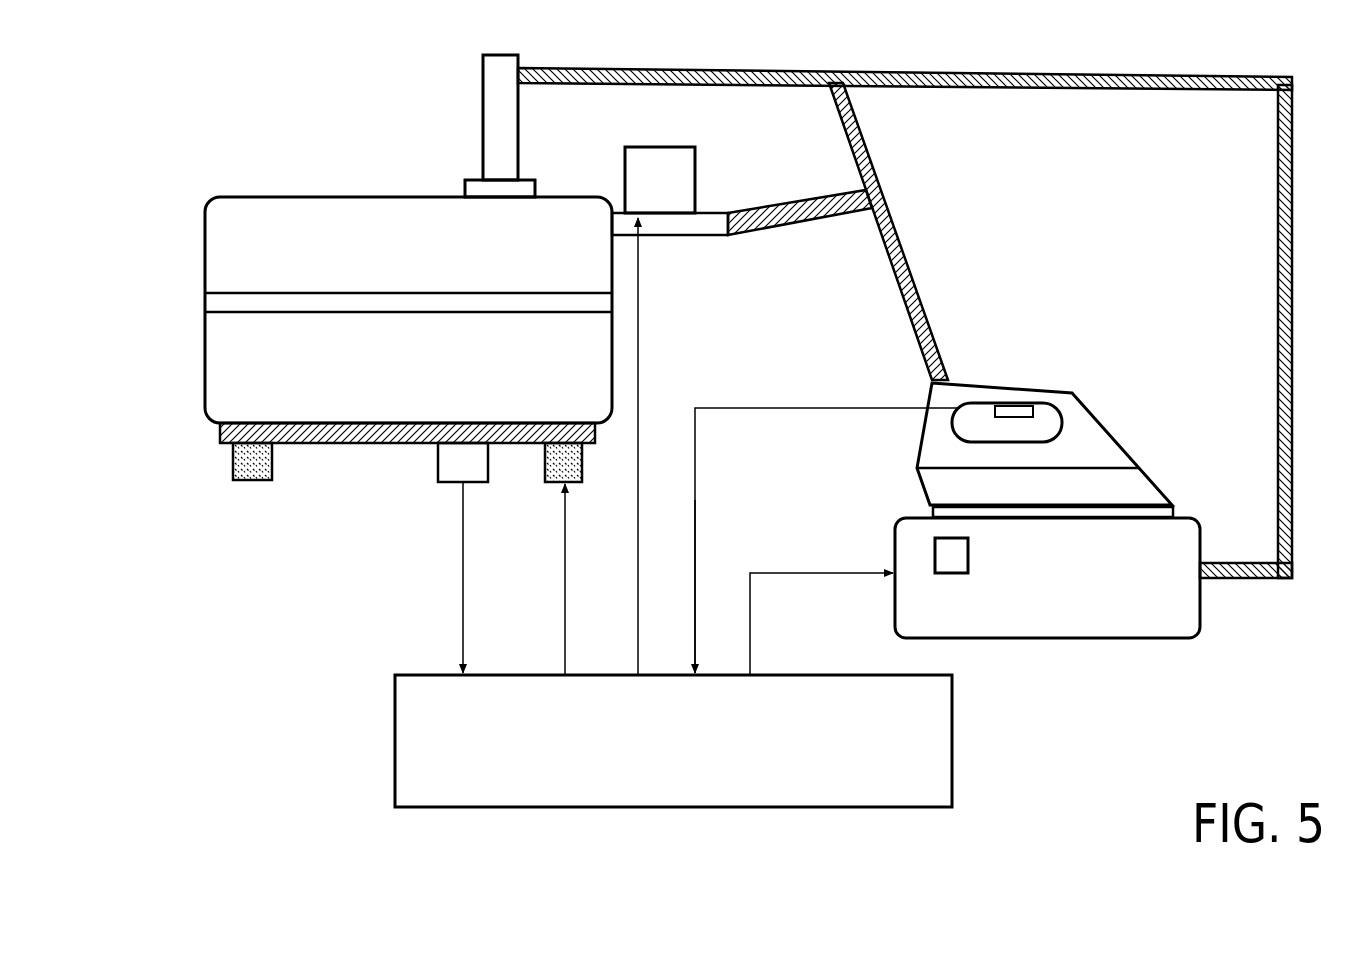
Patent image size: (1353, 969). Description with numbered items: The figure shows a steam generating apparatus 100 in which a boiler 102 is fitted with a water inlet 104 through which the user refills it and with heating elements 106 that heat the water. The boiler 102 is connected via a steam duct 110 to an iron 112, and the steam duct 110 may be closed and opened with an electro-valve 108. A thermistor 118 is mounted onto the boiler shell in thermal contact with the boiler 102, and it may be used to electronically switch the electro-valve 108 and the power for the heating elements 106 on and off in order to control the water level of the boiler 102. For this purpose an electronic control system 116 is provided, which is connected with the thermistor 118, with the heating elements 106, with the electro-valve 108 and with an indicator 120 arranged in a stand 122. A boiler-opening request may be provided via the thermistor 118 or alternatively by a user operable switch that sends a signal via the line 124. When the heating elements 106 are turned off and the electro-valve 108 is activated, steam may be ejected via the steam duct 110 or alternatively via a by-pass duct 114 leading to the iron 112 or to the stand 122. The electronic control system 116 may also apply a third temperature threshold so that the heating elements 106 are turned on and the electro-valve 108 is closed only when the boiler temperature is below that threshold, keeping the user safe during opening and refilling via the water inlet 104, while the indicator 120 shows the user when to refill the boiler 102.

The steam generating apparatus 100 is at (262, 128).
The boiler 102 is at (212, 254).
The water inlet 104 is at (502, 60).
The heating elements 106 is at (253, 483).
The electro-valve 108 is at (660, 155).
The steam duct 110 is at (785, 222).
The iron 112 is at (1097, 418).
The by-pass duct 114 is at (760, 70).
The electronic control system 116 is at (395, 760).
The thermistor 118 is at (448, 470).
The indicator 120 is at (968, 556).
The stand 122 is at (1040, 640).
The line 124 is at (790, 405).